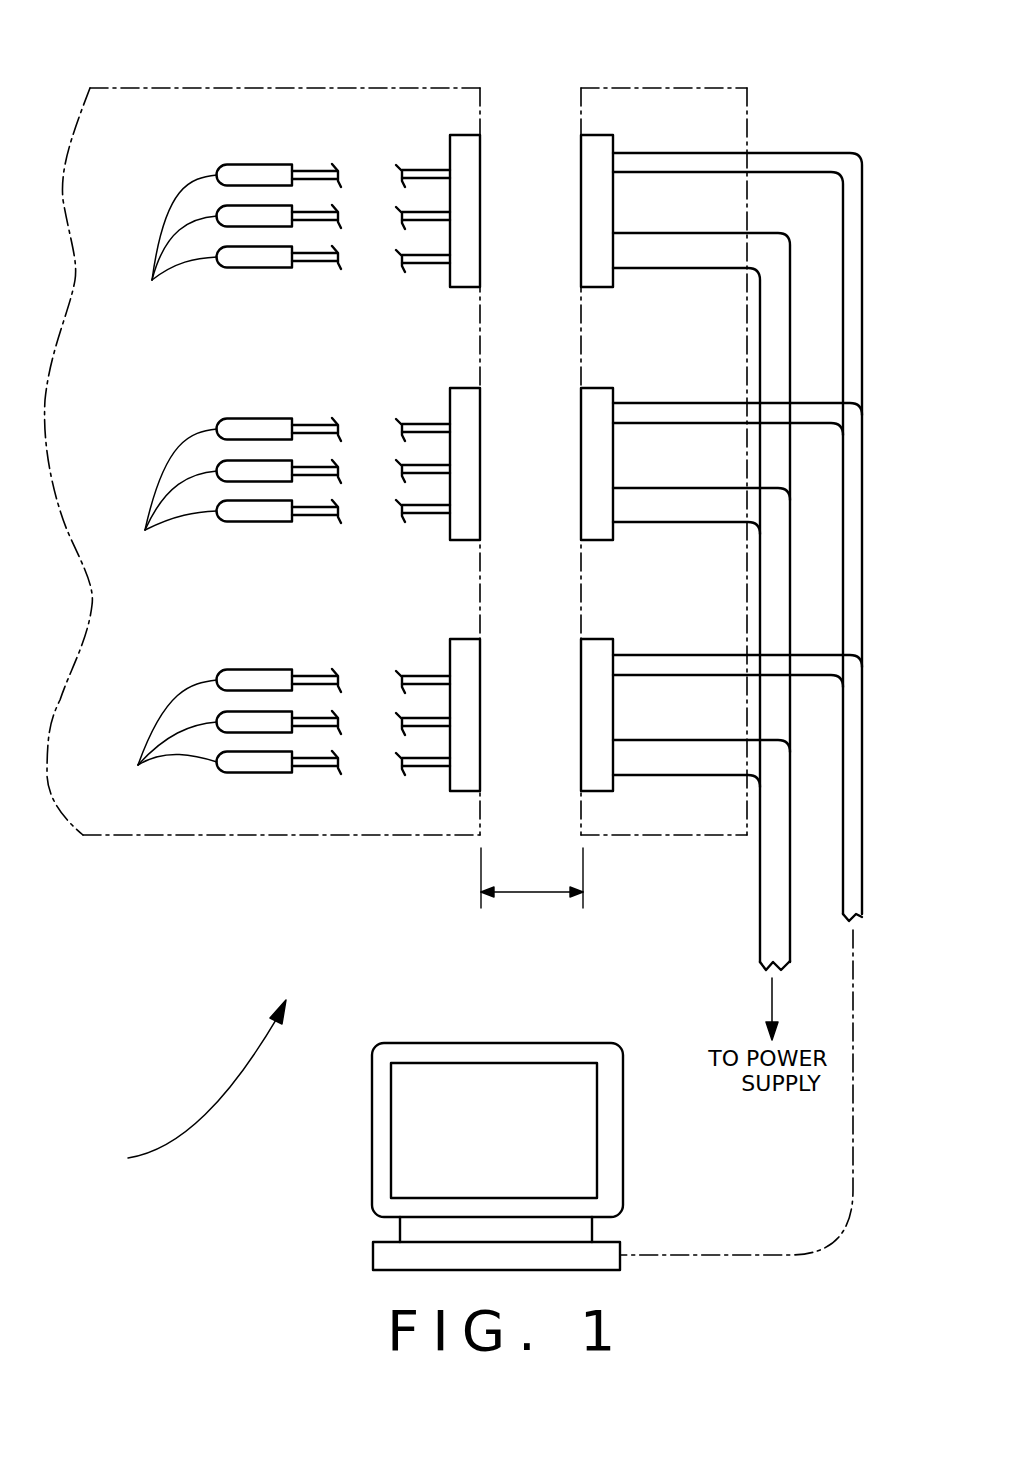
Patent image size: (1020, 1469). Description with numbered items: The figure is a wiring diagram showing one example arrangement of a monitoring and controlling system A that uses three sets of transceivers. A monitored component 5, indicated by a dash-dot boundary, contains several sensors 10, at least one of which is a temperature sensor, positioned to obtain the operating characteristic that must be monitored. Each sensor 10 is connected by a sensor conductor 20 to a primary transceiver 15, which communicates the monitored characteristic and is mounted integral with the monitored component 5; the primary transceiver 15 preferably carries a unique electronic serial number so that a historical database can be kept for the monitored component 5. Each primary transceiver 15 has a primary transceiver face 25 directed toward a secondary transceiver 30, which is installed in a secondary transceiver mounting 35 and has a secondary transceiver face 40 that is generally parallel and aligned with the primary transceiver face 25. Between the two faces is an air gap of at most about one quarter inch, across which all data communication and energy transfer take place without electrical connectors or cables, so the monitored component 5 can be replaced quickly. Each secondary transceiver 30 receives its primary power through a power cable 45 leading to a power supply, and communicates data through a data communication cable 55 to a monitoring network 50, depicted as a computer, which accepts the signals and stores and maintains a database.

The monitored component 5 is at (158, 88).
The sensor 10 is at (168, 486).
The primary transceiver 15 is at (466, 135).
The sensor conductor 20 is at (322, 170).
The primary transceiver face 25 is at (480, 153).
The secondary transceiver 30 is at (594, 132).
The secondary transceiver mounting 35 is at (588, 88).
The secondary transceiver face 40 is at (578, 155).
The power cable 45 is at (685, 233).
The monitoring network 50 is at (472, 1043).
The data communication cable 55 is at (805, 152).
The monitoring and controlling system A is at (194, 1086).